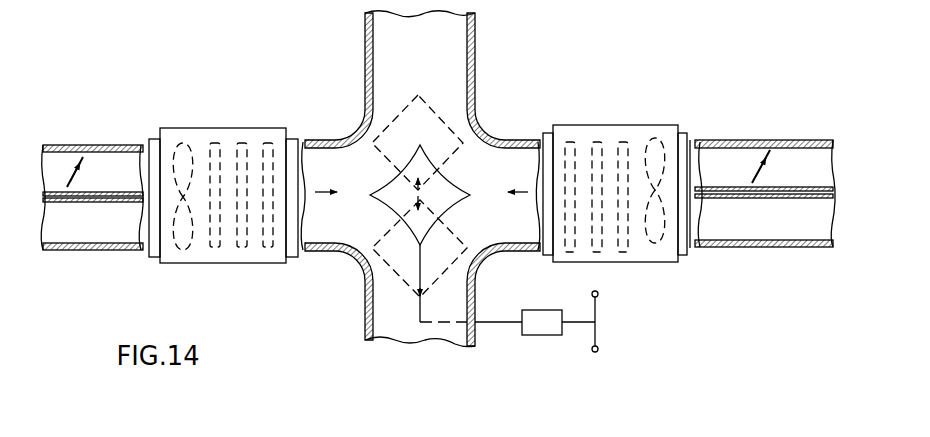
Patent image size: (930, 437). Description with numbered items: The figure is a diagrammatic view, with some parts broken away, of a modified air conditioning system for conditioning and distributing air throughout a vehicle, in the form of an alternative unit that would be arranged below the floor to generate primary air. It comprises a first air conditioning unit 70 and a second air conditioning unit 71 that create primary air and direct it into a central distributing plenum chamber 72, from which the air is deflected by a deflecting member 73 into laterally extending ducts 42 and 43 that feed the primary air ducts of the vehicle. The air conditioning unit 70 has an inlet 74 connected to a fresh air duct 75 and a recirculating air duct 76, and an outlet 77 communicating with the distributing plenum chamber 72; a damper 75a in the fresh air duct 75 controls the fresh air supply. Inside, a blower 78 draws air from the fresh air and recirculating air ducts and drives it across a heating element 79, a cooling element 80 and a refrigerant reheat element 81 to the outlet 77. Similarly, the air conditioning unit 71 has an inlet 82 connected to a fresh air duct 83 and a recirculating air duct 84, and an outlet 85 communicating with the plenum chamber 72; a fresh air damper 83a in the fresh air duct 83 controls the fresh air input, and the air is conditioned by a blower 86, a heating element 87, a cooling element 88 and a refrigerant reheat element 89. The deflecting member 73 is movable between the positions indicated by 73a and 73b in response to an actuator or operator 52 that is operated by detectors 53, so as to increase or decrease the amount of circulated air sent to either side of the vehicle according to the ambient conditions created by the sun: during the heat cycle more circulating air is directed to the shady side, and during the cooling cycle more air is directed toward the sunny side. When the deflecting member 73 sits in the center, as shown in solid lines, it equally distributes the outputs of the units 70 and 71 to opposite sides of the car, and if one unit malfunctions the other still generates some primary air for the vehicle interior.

The laterally extending duct 42 is at (452, 50).
The laterally extending duct 43 is at (367, 313).
The distributing plenum chamber 72 is at (472, 153).
The deflecting member 73 is at (458, 182).
The deflecting member position 73a is at (465, 97).
The deflecting member position 73b is at (468, 283).
The first air conditioning unit 70 is at (227, 127).
The second air conditioning unit 71 is at (608, 124).
The inlet 74 is at (147, 230).
The fresh air duct 75 is at (62, 153).
The damper 75a is at (88, 158).
The recirculating air duct 76 is at (63, 233).
The outlet 77 is at (298, 228).
The blower 78 is at (180, 250).
The heating element 79 is at (215, 247).
The cooling element 80 is at (242, 247).
The refrigerant reheat element 81 is at (268, 247).
The inlet 82 is at (690, 225).
The fresh air duct 83 is at (787, 140).
The fresh air damper 83a is at (770, 150).
The recirculating air duct 84 is at (770, 230).
The outlet 85 is at (540, 230).
The blower 86 is at (673, 130).
The heating element 87 is at (630, 128).
The cooling element 88 is at (595, 140).
The refrigerant reheat element 89 is at (568, 140).
The actuator 52 is at (542, 335).
The detectors 53 is at (600, 293).